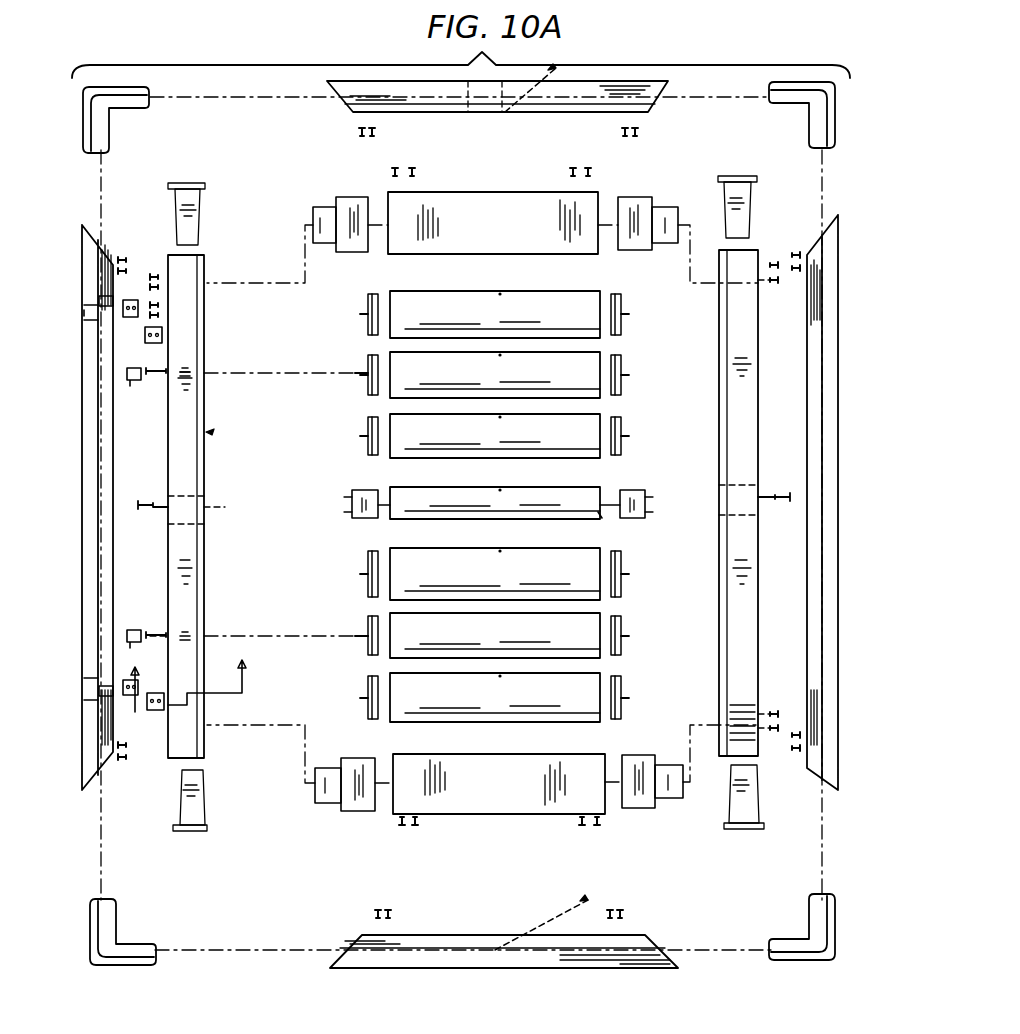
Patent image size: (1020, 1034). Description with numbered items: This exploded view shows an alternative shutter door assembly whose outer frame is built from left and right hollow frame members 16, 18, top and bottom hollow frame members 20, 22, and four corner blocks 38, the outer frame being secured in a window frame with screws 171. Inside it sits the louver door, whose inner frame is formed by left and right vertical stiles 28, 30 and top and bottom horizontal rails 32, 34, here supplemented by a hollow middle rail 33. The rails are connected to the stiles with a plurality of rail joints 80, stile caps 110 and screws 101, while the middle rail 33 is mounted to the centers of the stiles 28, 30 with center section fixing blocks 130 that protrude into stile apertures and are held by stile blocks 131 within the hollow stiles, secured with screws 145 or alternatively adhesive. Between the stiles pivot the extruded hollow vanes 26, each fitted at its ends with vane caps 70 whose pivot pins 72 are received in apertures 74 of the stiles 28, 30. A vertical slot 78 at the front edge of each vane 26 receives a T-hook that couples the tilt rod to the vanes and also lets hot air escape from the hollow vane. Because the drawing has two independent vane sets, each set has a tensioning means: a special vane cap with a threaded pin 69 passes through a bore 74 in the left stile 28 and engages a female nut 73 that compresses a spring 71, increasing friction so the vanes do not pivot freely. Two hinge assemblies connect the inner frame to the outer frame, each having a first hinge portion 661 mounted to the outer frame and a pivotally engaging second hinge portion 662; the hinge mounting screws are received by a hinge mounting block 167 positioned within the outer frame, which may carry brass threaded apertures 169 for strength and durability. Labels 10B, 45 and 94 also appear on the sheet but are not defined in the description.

The section line 10B is at (191, 675).
The left hollow frame member 16 is at (82, 515).
The right hollow frame member 18 is at (832, 460).
The top hollow frame member 20 is at (545, 113).
The bottom hollow frame member 22 is at (480, 933).
The vane 26 is at (565, 352).
The left vertical stile 28 is at (186, 468).
The right vertical stile 30 is at (745, 462).
The top horizontal rail 32 is at (489, 205).
The middle rail 33 is at (600, 517).
The bottom horizontal rail 34 is at (510, 815).
The corner block 38 is at (118, 112).
The screws 45 is at (364, 127).
The threaded pin 69 is at (360, 370).
The vane cap 70 is at (368, 303).
The spring 71 is at (170, 374).
The pivot pin 72 is at (362, 314).
The female nut 73 is at (134, 384).
The aperture 74 is at (190, 392).
The vertical slot 78 is at (500, 294).
The rail joint 80 is at (350, 197).
The reflector edge 94 is at (214, 430).
The screw 101 is at (398, 167).
The stile cap 110 is at (200, 183).
The center section fixing block 130 is at (344, 505).
The stile block 131 is at (206, 510).
The screw 145 is at (142, 505).
The hinge mounting block 167 is at (88, 314).
The brass threaded aperture 169 is at (99, 300).
The screw 171 is at (560, 70).
The first hinge portion 661 is at (123, 308).
The second hinge portion 662 is at (145, 340).